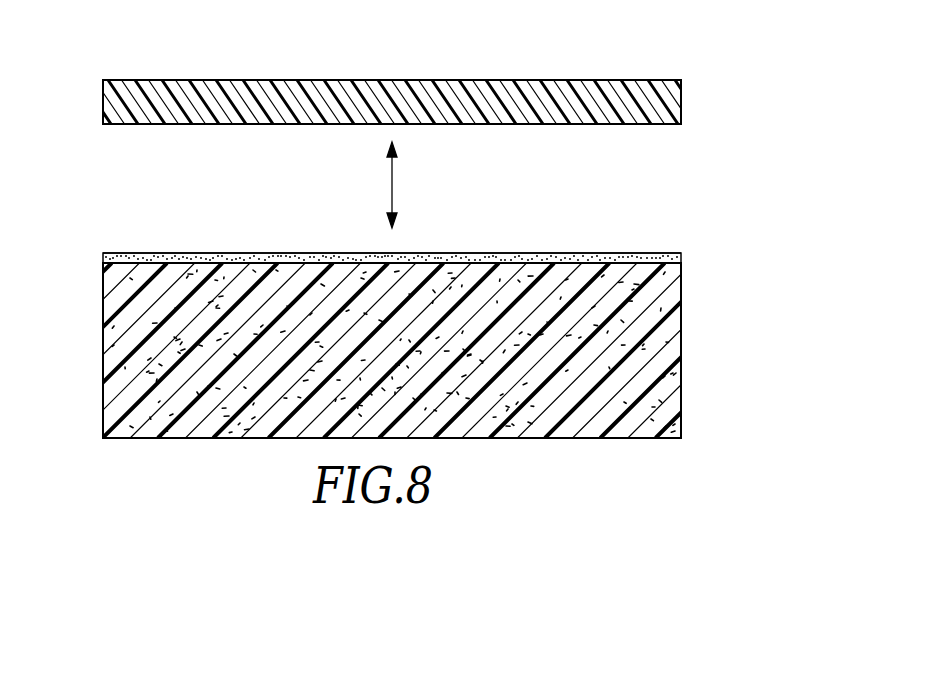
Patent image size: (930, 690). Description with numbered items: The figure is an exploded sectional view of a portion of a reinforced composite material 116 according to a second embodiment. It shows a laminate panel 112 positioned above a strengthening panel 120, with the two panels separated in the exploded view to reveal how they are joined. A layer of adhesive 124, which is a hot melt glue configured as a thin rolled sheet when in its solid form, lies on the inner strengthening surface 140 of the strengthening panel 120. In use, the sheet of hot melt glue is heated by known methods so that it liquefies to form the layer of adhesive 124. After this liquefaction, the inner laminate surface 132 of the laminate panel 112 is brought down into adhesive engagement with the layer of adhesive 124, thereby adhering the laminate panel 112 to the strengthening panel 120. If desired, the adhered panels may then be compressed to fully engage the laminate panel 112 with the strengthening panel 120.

The laminate panel 112 is at (103, 96).
The reinforced composite material 116 is at (700, 90).
The strengthening panel 120 is at (103, 337).
The layer of adhesive 124 is at (103, 258).
The inner laminate surface 132 is at (627, 124).
The inner strengthening surface 140 is at (632, 254).